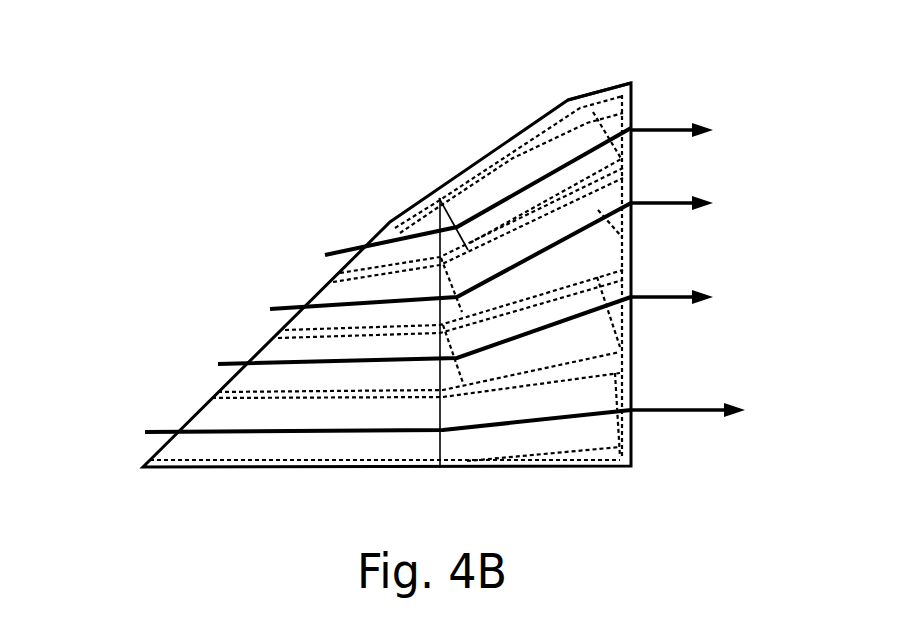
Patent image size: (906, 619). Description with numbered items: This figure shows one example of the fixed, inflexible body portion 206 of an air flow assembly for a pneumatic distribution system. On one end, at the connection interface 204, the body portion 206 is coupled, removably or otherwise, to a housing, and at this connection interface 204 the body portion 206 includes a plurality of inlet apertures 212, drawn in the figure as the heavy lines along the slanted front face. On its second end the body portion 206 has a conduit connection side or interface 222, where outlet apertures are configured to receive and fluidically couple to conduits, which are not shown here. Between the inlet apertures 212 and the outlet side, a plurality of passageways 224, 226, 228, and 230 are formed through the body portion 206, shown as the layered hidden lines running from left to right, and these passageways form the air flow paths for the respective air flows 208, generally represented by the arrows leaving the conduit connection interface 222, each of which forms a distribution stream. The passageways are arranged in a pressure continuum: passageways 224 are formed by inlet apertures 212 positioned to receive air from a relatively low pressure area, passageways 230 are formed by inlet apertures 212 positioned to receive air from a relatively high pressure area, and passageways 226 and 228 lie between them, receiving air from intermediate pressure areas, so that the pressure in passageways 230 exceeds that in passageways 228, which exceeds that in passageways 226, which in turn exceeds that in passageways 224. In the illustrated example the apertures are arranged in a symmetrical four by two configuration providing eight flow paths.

The connection interface 204 is at (260, 348).
The fixed, inflexible body portion 206 is at (333, 128).
The air flow 208 is at (712, 272).
The inlet apertures 212 is at (388, 231).
The conduit connection side or interface 222 is at (612, 83).
The passageways 224 is at (413, 225).
The passageways 226 is at (400, 285).
The passageways 228 is at (370, 381).
The passageways 230 is at (483, 430).